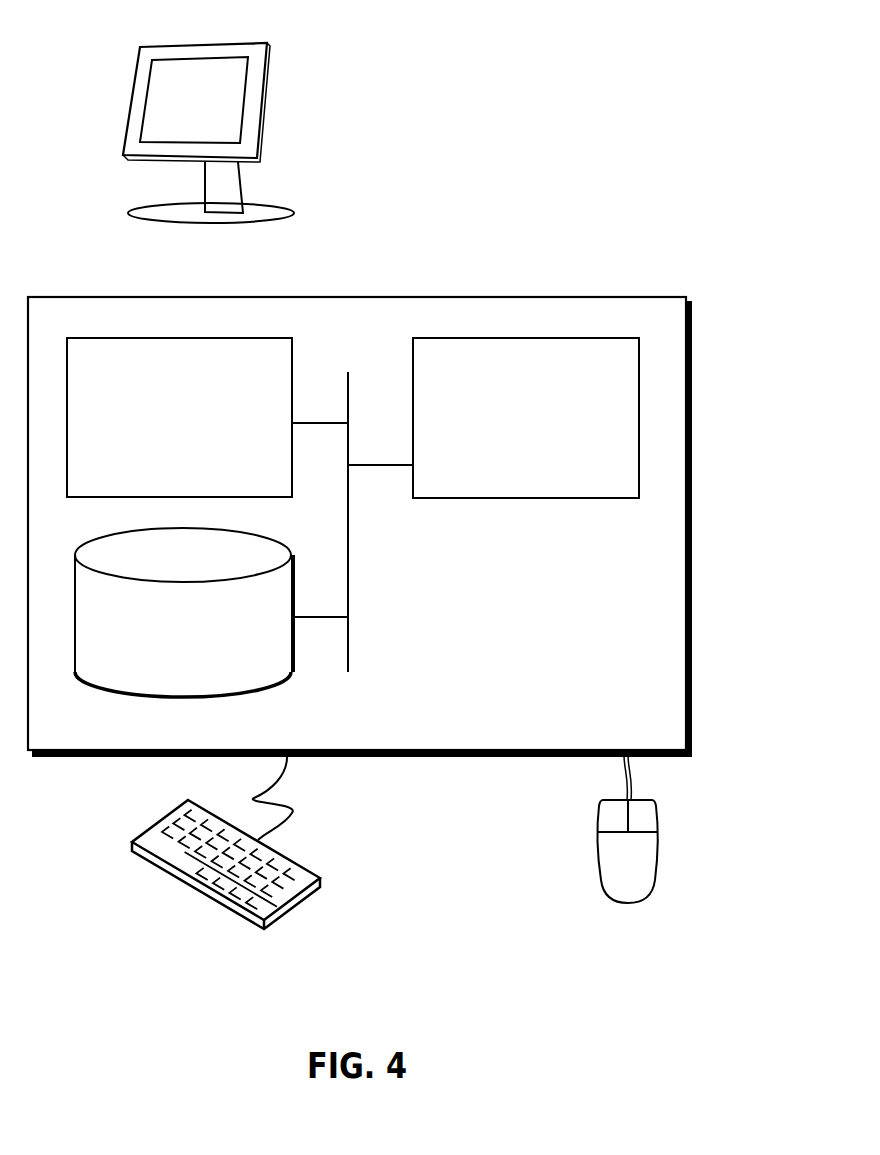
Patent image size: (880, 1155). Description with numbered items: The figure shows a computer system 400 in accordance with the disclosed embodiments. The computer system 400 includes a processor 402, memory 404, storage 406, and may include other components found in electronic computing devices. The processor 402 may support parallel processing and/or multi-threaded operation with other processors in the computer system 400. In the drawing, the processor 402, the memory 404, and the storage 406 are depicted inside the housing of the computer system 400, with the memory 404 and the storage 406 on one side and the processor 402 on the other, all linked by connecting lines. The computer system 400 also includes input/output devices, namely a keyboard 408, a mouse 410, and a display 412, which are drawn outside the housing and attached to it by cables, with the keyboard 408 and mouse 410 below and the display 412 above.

The computer system 400 is at (403, 275).
The processor 402 is at (510, 430).
The memory 404 is at (160, 431).
The storage 406 is at (167, 642).
The keyboard 408 is at (148, 863).
The mouse 410 is at (608, 873).
The display 412 is at (58, 297).